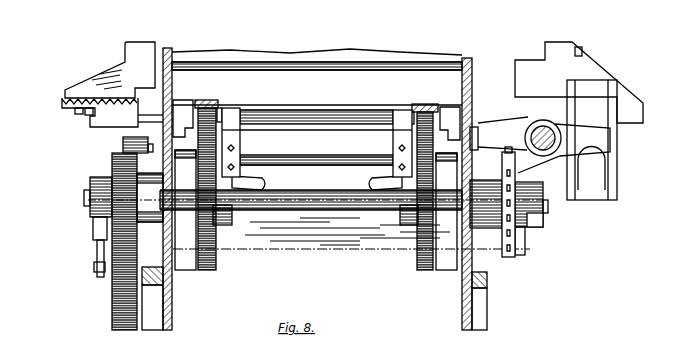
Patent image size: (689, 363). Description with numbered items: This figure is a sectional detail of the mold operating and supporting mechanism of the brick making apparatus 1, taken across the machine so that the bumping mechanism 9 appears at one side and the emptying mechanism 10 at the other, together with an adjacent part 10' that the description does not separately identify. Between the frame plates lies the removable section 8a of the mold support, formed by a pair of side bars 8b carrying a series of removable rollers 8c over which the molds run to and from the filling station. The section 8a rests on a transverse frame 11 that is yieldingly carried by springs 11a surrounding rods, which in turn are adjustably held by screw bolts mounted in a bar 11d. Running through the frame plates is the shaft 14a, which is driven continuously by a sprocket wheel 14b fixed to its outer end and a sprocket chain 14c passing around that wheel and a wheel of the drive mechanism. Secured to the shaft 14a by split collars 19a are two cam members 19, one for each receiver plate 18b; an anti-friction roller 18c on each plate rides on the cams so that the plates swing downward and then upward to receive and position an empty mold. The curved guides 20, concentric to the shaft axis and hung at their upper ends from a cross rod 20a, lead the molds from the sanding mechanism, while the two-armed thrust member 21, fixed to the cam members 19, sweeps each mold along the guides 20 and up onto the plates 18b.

The brick making apparatus 1 is at (317, 48).
The bumping mechanism 9 is at (148, 48).
The emptying mechanism 10 is at (341, 189).
The frame bracket 10' is at (338, 320).
The removable section 8a is at (330, 110).
The side bars 8b is at (182, 108).
The removable rollers 8c is at (280, 108).
The receiver plates 18b is at (212, 100).
The anti-friction roller 18c is at (223, 110).
The transverse frame 11 is at (316, 151).
The springs 11a is at (266, 184).
The bar 11d is at (365, 250).
The cross rod 20a is at (350, 165).
The thrust member 21 is at (242, 132).
The cam member 19 is at (208, 270).
The split collar 19a is at (225, 226).
The guide 20 is at (186, 270).
The shaft 14a is at (330, 210).
The sprocket wheel 14b is at (508, 239).
The sprocket chain 14c is at (515, 257).